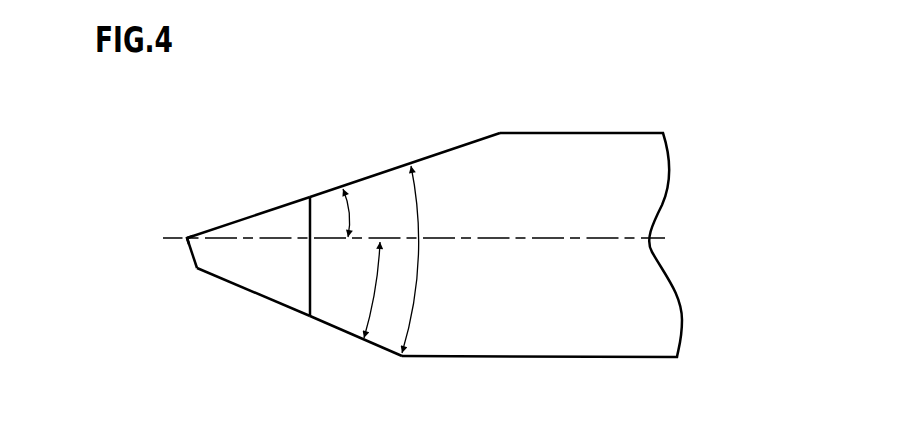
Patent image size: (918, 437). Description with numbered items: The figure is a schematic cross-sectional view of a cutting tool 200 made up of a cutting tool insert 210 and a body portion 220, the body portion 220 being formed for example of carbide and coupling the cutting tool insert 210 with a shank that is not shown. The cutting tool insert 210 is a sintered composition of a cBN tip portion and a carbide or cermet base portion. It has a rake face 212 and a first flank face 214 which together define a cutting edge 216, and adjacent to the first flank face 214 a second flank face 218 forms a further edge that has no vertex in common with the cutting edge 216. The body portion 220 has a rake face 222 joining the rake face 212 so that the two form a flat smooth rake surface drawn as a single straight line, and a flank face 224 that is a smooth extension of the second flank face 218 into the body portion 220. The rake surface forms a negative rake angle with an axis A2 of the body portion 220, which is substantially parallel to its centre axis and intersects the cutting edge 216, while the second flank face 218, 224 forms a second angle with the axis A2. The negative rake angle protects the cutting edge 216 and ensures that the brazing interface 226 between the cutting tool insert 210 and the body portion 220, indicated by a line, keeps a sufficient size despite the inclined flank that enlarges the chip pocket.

The cutting tool 200 is at (700, 140).
The cutting tool insert 210 is at (292, 278).
The rake face 212 is at (234, 222).
The first flank face 214 is at (191, 252).
The cutting edge 216 is at (187, 236).
The second flank face 218 is at (252, 292).
The body portion 220 is at (557, 307).
The rake face 222 is at (381, 172).
The flank face 224 is at (348, 333).
The brazing interface 226 is at (311, 288).
The axis A2 is at (542, 237).